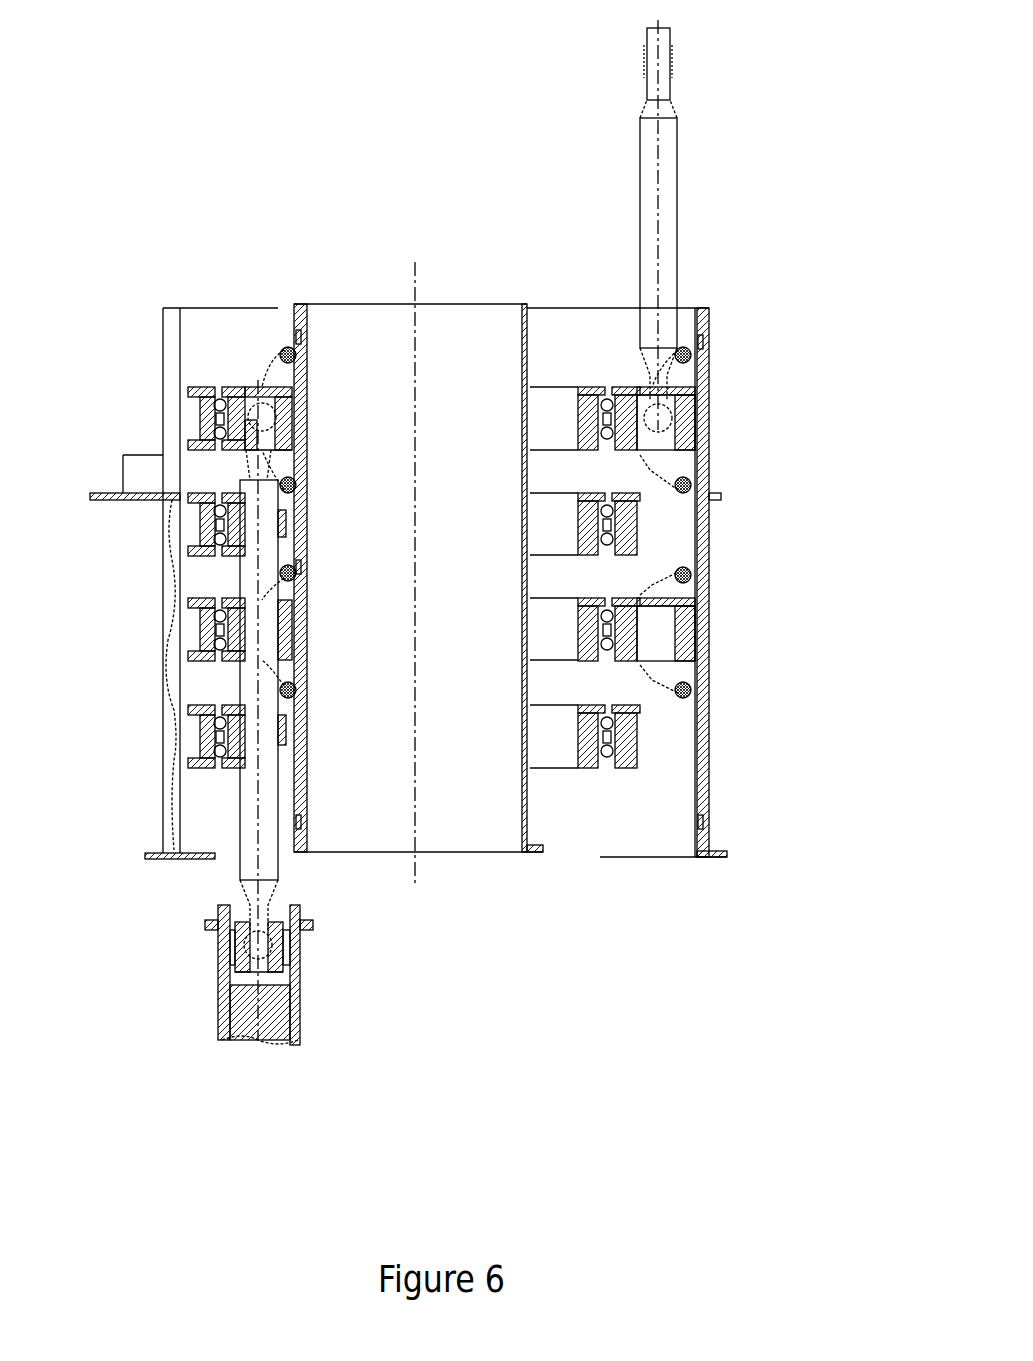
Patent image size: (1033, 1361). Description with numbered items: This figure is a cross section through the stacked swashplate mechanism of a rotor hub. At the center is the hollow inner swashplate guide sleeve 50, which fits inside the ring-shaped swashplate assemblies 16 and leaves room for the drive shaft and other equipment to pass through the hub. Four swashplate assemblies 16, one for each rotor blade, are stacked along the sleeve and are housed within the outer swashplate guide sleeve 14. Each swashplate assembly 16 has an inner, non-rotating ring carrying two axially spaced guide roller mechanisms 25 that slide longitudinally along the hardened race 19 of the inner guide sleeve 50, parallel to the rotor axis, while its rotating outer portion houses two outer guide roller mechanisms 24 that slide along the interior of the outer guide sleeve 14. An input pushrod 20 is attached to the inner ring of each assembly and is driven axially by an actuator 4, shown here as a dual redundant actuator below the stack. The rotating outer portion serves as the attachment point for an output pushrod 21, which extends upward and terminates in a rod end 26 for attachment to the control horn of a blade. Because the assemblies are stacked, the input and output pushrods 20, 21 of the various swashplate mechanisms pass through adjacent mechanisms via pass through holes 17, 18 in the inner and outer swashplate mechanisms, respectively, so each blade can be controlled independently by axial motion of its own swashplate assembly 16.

The actuator 4 is at (218, 975).
The outer swashplate guide sleeve 14 is at (712, 786).
The swashplate assembly 16 is at (196, 412).
The pass through hole 17 is at (258, 527).
The pass through hole 18 is at (658, 647).
The hardened race 19 is at (297, 797).
The input pushrod 20 is at (240, 822).
The output pushrod 21 is at (676, 222).
The outer guide roller mechanism 24 is at (677, 459).
The guide roller mechanism 25 is at (284, 672).
The rod end 26 is at (676, 57).
The inner swashplate guide sleeve 50 is at (357, 305).